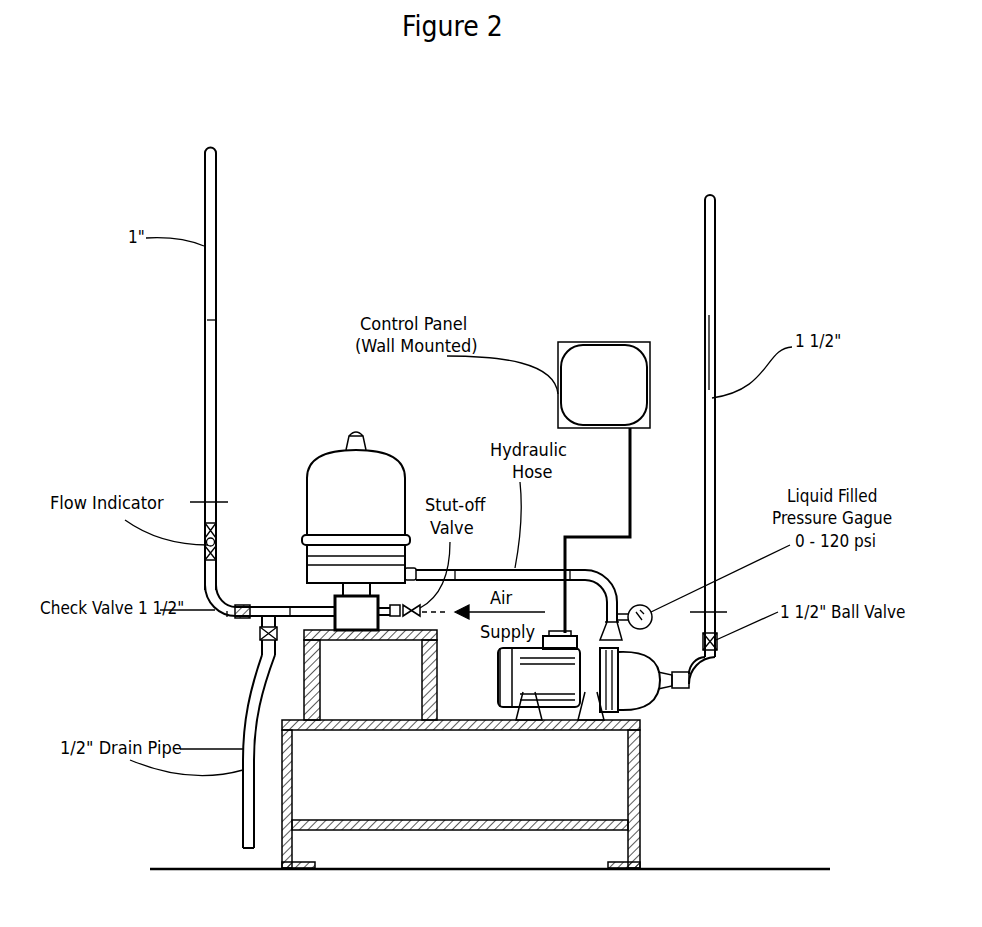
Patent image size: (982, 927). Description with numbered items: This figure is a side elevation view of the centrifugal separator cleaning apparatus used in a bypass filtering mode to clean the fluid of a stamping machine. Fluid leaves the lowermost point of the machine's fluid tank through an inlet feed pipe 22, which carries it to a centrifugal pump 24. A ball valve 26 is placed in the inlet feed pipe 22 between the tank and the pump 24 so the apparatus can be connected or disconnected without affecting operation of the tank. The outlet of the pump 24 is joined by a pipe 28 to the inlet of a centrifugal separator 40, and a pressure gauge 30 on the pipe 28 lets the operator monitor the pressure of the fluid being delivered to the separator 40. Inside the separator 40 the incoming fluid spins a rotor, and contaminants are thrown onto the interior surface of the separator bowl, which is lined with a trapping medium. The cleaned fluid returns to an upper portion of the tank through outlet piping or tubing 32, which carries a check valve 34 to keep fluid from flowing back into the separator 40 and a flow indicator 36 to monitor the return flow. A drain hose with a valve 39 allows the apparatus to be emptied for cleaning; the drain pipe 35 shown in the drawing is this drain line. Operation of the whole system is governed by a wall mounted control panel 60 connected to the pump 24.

The inlet feed pipe 22 is at (713, 447).
The centrifugal pump 24 is at (640, 703).
The ball valve 26 is at (717, 648).
The pipe 28 is at (535, 568).
The pressure gauge 30 is at (646, 605).
The outlet piping or tubing 32 is at (207, 455).
The check valve 34 is at (245, 615).
The 1/2 inch drain pipe 35 is at (243, 824).
The flow indicator 36 is at (208, 545).
The valve 39 is at (260, 652).
The centrifugal separator 40 is at (318, 455).
The control panel 60 is at (592, 342).